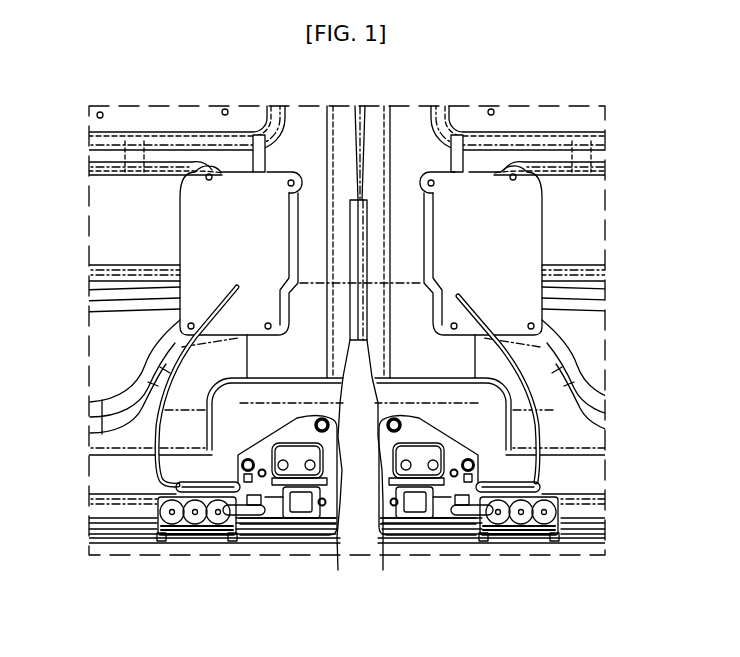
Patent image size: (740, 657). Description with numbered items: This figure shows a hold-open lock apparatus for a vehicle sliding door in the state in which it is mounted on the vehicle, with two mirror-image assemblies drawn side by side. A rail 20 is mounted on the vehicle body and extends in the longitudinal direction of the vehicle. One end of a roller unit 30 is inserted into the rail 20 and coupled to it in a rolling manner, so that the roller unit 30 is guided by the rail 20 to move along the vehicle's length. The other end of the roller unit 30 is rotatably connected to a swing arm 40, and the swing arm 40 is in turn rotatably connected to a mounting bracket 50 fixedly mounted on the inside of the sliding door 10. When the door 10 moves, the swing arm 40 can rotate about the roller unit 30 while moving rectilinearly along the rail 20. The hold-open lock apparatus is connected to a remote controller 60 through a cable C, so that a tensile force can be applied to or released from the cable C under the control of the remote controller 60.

The sliding door 10 is at (410, 115).
The rail 20 is at (109, 513).
The roller unit 30 is at (207, 542).
The swing arm 40 is at (293, 522).
The mounting bracket 50 is at (303, 437).
The remote controller 60 is at (193, 220).
The cable C is at (187, 340).